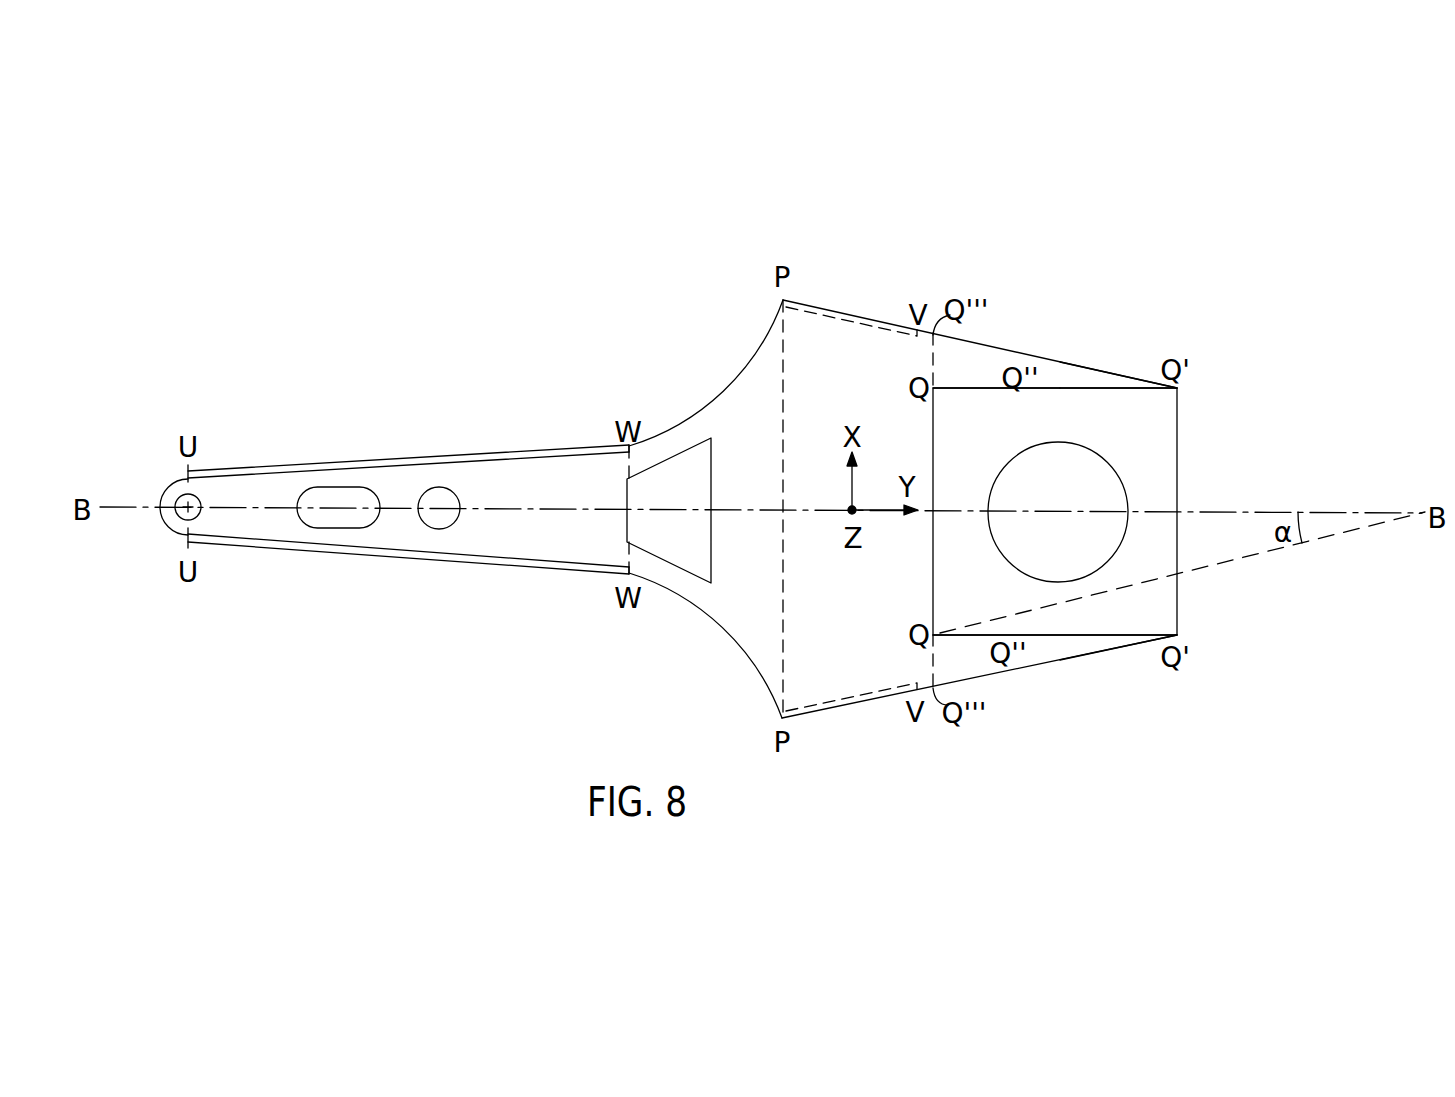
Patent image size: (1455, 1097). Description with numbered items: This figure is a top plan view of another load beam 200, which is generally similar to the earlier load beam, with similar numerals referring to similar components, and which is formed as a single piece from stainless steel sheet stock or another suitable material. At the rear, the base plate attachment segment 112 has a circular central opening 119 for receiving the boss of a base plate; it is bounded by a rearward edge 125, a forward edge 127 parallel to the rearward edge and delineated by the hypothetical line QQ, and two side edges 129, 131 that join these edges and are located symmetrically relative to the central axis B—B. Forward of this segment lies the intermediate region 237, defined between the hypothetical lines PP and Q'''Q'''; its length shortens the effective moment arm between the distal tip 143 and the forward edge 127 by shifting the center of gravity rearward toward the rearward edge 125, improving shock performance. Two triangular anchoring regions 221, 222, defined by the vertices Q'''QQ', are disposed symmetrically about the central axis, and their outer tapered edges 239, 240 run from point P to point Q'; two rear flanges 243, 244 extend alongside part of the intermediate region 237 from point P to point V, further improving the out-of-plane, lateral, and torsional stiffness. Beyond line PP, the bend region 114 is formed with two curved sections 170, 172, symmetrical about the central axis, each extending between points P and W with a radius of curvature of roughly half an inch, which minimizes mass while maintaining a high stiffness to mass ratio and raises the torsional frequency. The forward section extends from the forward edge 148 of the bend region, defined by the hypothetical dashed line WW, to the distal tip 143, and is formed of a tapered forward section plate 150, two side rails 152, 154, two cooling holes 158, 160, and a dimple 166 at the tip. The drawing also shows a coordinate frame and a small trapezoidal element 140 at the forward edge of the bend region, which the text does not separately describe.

The load beam 200 is at (596, 392).
The distal tip 143 is at (162, 499).
The dimple 166 is at (176, 522).
The side rail 154 is at (262, 467).
The tapered forward section plate 150 is at (484, 478).
The side rail 152 is at (262, 548).
The forward edge of the bend region 148 is at (627, 558).
The cooling hole 160 is at (337, 528).
The cooling hole 158 is at (437, 529).
The mounting block 140 is at (663, 463).
The curved section 172 is at (708, 403).
The curved section 170 is at (670, 596).
The bend region 114 is at (731, 628).
The rear flange 243 is at (853, 315).
The rear flange 244 is at (866, 701).
The upper tapered surface 240 is at (1036, 334).
The lower tapered surface 239 is at (1008, 690).
The triangular anchoring region 222 is at (1100, 378).
The triangular anchoring region 221 is at (1107, 646).
The rearward edge 125 is at (1178, 432).
The base plate attachment segment 112 is at (1158, 617).
The forward edge 127 is at (935, 411).
The side edge 129 is at (1118, 387).
The side edge 131 is at (1062, 637).
The circular central opening 119 is at (1073, 442).
The intermediate region 237 is at (832, 601).